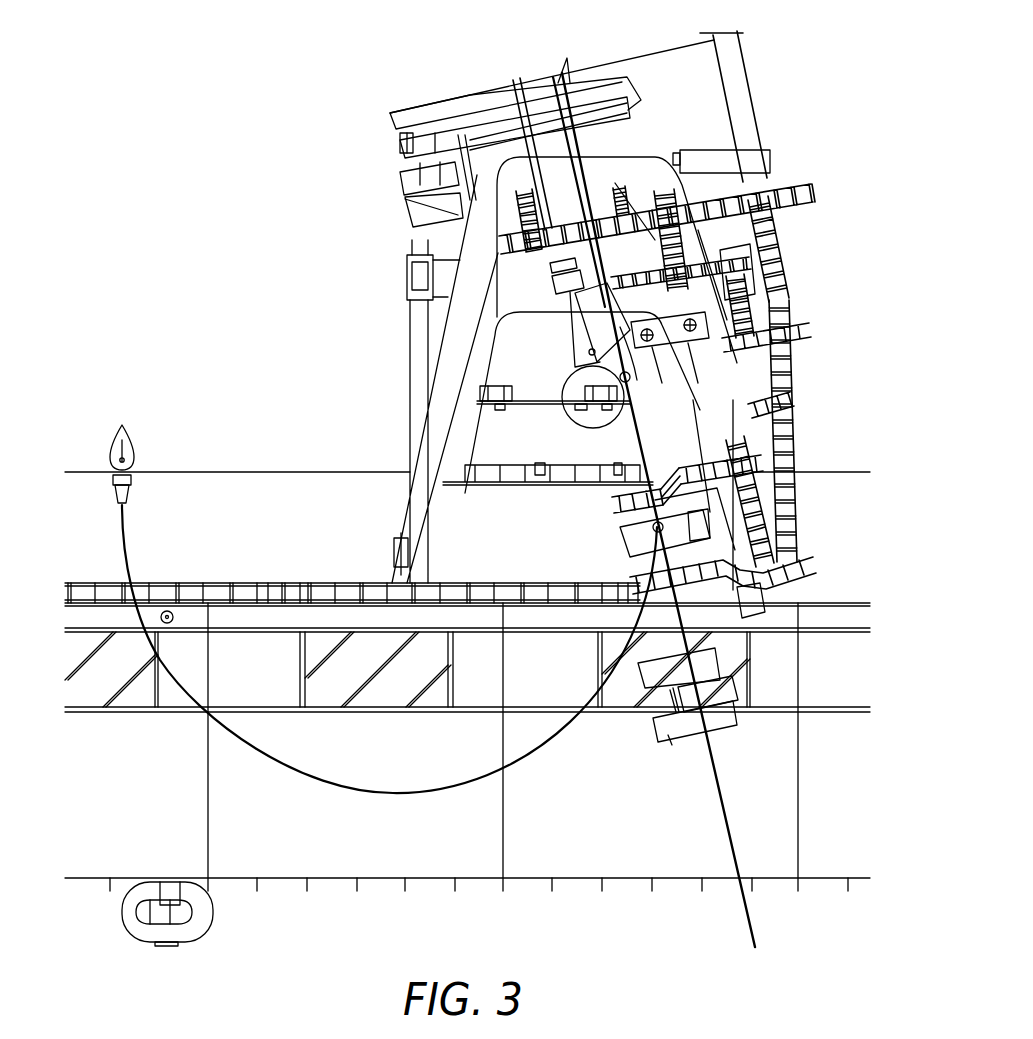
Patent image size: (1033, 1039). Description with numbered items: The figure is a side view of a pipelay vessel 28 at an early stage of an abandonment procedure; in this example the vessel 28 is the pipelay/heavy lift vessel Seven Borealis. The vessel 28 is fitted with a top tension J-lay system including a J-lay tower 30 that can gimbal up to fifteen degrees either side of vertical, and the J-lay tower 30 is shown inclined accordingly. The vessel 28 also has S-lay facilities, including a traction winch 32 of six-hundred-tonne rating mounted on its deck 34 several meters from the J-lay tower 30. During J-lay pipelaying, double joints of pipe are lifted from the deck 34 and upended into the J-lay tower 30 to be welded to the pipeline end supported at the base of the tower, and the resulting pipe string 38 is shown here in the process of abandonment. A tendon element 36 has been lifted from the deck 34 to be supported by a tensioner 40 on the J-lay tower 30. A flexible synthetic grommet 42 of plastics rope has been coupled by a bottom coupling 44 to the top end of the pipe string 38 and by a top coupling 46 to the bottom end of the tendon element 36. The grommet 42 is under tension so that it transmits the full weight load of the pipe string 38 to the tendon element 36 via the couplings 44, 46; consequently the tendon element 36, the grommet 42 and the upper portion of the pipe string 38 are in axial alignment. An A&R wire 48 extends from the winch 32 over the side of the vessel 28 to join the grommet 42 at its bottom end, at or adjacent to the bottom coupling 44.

The vessel 28 is at (184, 249).
The J-lay tower 30 is at (782, 142).
The traction winch 32 is at (108, 455).
The deck 34 is at (266, 470).
The tendon element 36 is at (594, 294).
The pipe string 38 is at (724, 800).
The tensioner 40 is at (540, 105).
The flexible synthetic grommet 42 is at (622, 418).
The bottom coupling 44 is at (652, 528).
The top coupling 46 is at (631, 381).
The A&R wire 48 is at (120, 536).